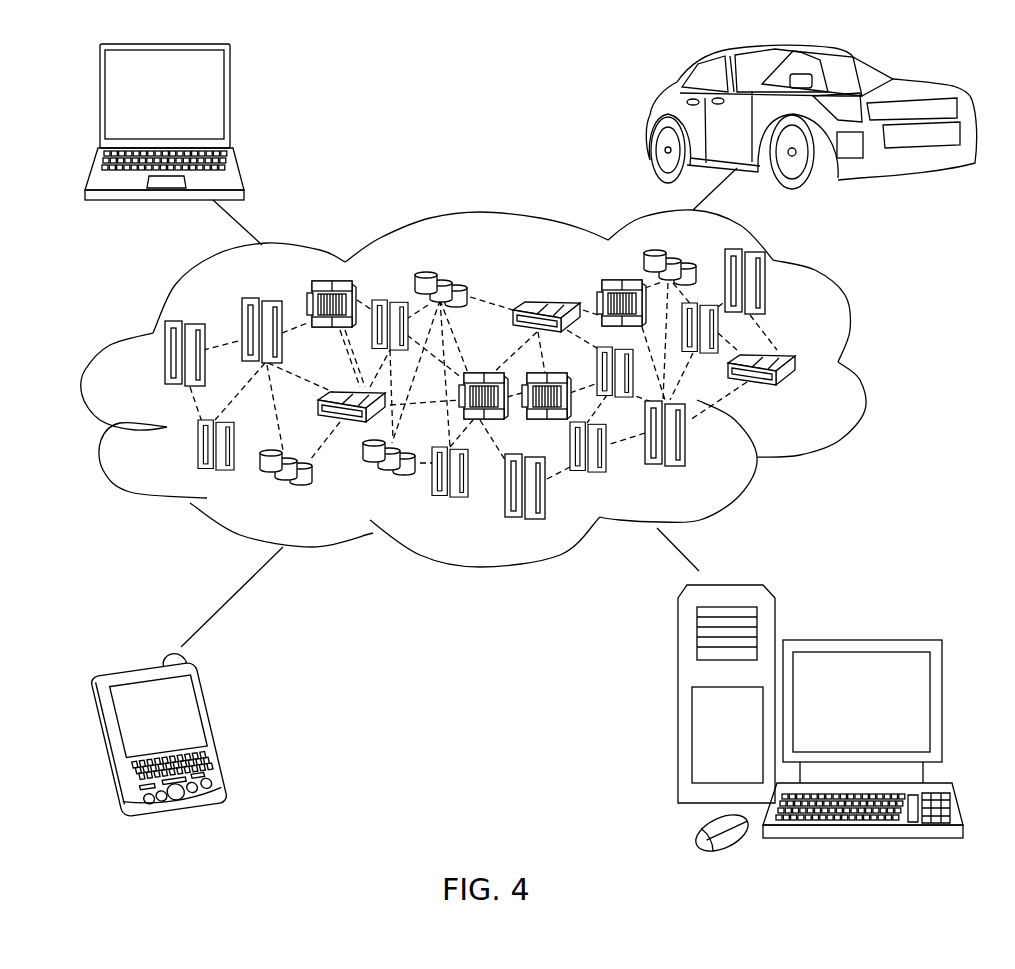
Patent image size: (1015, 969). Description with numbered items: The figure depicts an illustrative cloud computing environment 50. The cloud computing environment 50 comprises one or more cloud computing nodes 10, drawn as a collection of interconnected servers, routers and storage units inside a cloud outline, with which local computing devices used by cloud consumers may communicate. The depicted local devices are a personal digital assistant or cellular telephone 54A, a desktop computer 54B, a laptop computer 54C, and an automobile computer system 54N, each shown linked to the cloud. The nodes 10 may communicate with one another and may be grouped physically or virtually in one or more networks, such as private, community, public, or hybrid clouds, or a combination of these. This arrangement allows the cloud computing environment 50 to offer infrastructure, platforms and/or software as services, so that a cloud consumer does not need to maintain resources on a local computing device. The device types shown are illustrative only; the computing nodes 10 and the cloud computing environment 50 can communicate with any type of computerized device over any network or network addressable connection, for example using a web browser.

The cloud computing node 10 is at (812, 394).
The cloud computing environment 50 is at (848, 344).
The personal digital assistant or cellular telephone 54A is at (222, 728).
The desktop computer 54B is at (858, 640).
The laptop computer 54C is at (232, 102).
The automobile computer system 54N is at (648, 118).